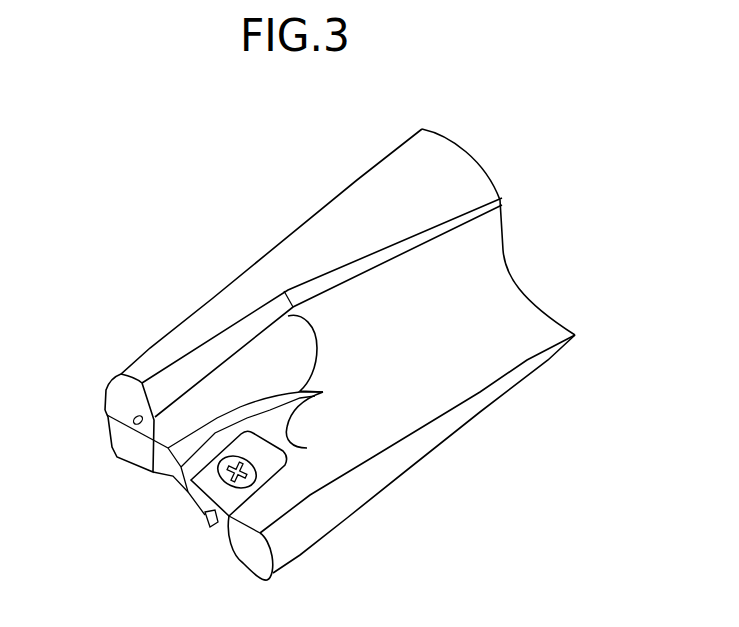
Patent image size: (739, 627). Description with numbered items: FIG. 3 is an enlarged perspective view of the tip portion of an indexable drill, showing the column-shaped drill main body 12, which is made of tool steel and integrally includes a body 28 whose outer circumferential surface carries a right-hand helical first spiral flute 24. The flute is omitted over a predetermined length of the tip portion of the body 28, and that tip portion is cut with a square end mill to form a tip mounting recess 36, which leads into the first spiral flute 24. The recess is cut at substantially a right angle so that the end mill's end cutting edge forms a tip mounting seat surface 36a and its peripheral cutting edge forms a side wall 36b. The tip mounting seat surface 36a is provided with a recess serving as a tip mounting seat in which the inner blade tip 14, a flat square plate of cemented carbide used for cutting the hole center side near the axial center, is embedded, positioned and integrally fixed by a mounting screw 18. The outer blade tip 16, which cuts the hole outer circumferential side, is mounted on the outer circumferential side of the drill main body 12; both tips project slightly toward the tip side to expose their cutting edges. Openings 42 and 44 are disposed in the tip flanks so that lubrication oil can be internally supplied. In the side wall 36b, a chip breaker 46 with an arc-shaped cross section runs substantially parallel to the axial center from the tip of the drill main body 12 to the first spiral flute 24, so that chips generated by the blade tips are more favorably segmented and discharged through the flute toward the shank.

The drill main body 12 is at (315, 373).
The body 28 is at (380, 190).
The first spiral flute 24 is at (480, 291).
The side wall 36b is at (227, 345).
The chip breaker 46 is at (200, 392).
The opening 44 is at (105, 401).
The outer blade tip 16 is at (132, 445).
The mounting screw 18 is at (187, 487).
The opening 42 is at (212, 525).
The inner blade tip 14 is at (287, 466).
The tip mounting recess 36 is at (275, 516).
The tip mounting seat surface 36a is at (290, 450).